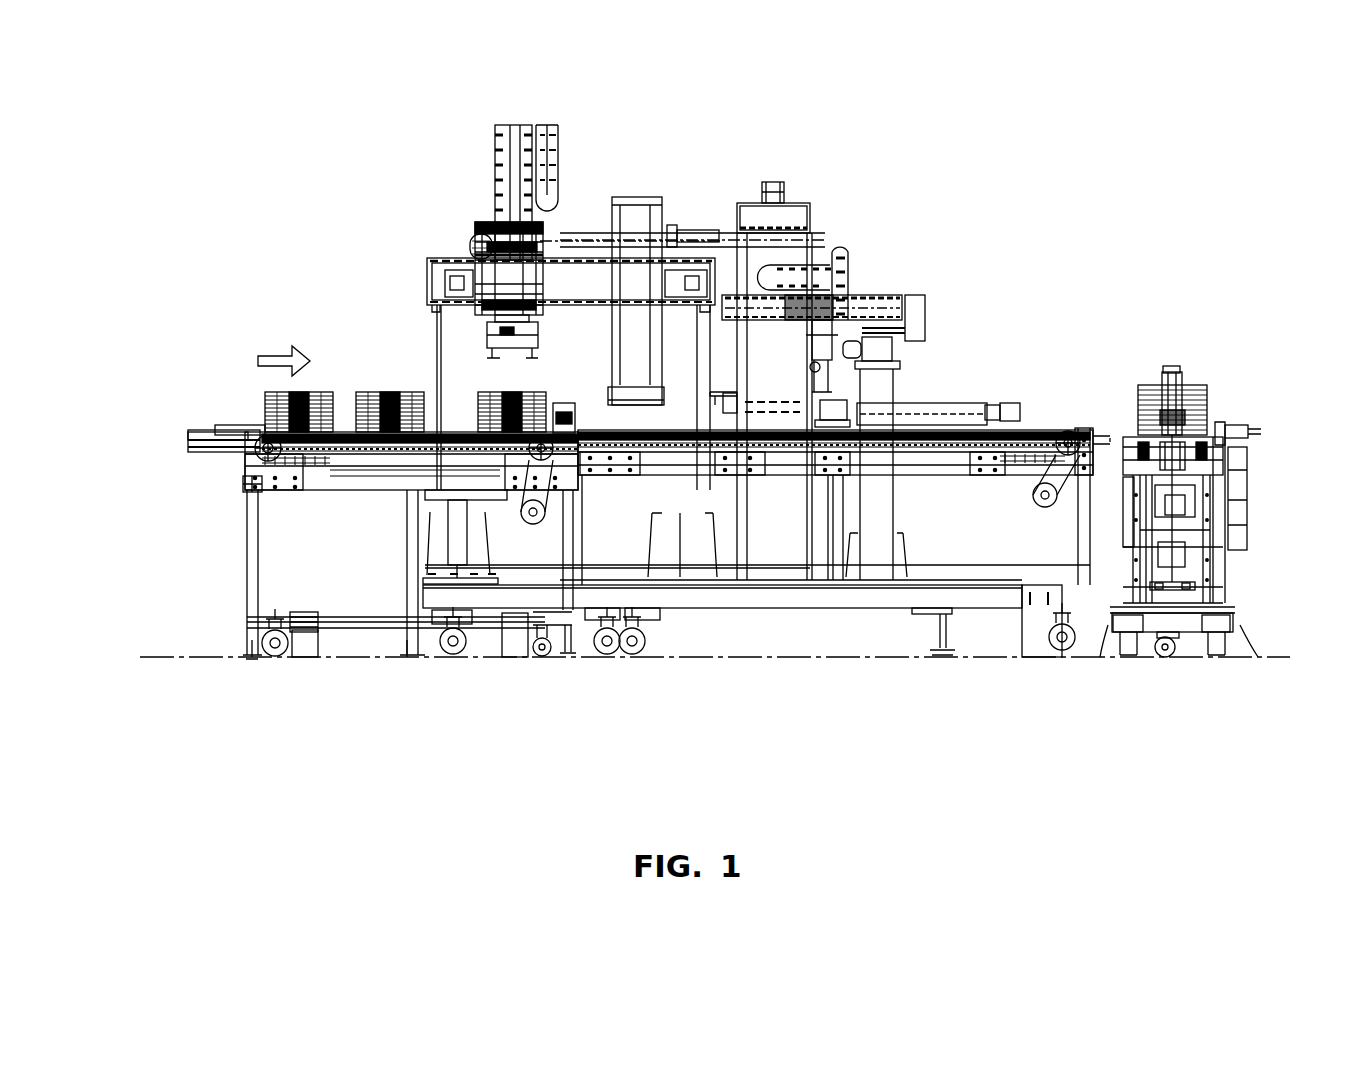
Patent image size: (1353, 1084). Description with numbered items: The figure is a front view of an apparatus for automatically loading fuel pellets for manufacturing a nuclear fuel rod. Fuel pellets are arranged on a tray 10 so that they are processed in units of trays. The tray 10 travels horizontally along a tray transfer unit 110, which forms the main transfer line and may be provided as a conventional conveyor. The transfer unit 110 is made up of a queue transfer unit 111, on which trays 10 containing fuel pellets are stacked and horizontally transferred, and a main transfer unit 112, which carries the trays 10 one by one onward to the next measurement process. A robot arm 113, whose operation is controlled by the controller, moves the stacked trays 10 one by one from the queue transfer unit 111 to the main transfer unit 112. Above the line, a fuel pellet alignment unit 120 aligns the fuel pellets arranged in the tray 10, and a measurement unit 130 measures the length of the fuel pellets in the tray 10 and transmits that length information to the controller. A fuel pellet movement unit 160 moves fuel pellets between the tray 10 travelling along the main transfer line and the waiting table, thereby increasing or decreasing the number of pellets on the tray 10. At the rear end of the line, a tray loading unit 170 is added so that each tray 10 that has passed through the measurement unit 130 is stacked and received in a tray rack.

The tray 10 is at (377, 392).
The tray transfer unit 110 is at (243, 415).
The queue transfer unit 111 is at (233, 427).
The main transfer unit 112 is at (1030, 434).
The robot arm 113 is at (488, 332).
The fuel pellet alignment unit 120 is at (714, 390).
The measurement unit 130 is at (772, 185).
The fuel pellet movement unit 160 is at (857, 277).
The tray loading unit 170 is at (1189, 369).